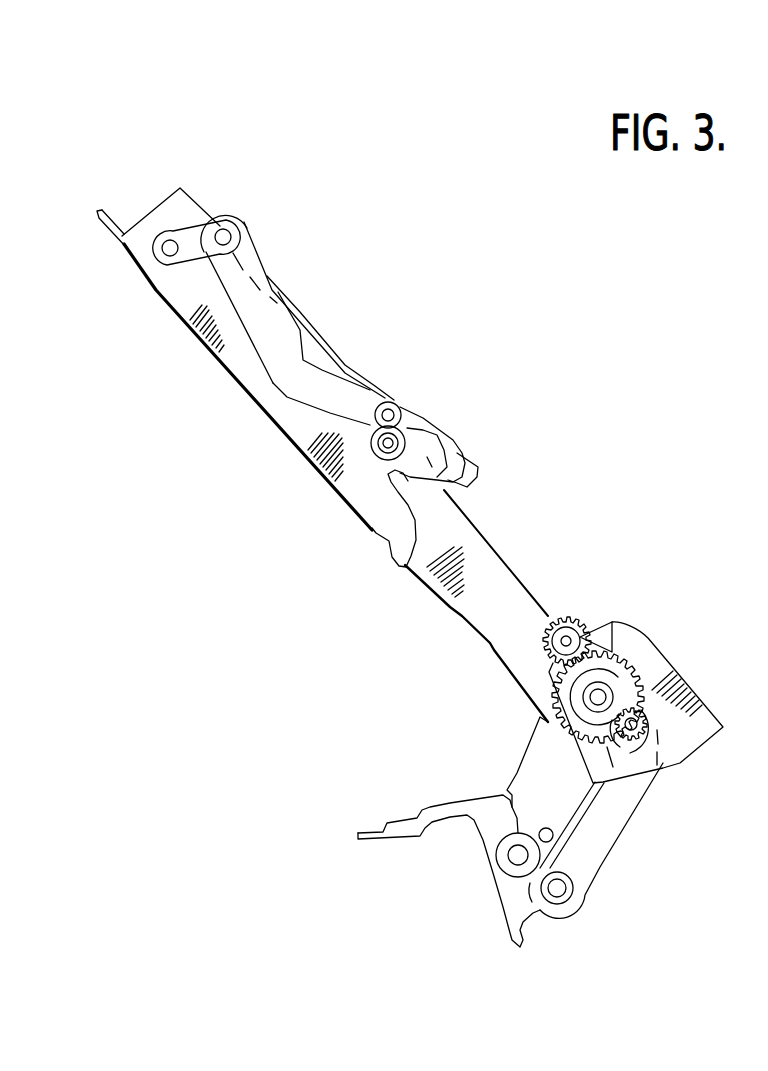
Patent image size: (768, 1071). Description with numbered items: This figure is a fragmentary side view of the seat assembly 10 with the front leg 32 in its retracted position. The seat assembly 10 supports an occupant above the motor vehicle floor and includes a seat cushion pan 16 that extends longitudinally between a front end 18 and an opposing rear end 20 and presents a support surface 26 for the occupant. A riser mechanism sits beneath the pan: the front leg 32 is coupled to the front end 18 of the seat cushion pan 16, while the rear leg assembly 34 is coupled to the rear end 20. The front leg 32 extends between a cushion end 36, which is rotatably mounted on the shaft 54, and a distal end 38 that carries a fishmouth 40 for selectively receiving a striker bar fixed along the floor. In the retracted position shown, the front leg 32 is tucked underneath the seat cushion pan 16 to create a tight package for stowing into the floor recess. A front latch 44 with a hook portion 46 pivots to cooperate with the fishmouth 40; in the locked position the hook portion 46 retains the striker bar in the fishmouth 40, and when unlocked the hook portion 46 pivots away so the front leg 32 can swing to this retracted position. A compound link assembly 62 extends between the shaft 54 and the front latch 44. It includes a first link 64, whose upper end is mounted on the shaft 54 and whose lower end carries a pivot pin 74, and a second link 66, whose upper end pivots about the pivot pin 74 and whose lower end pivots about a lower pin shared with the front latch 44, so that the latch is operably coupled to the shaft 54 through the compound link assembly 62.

The seat assembly 10 is at (657, 392).
The seat cushion pan 16 is at (173, 187).
The front end 18 is at (155, 207).
The rear end 20 is at (668, 760).
The support surface 26 is at (468, 617).
The front leg 32 is at (315, 338).
The rear leg assembly 34 is at (605, 871).
The cushion end 36 is at (183, 256).
The distal end 38 is at (472, 467).
The fishmouth 40 is at (367, 517).
The front latch 44 is at (432, 420).
The hook portion 46 is at (460, 453).
The shaft 54 is at (165, 251).
The compound link assembly 62 is at (256, 226).
The first link 64 is at (190, 262).
The second link 66 is at (272, 385).
The pivot pin 74 is at (240, 226).